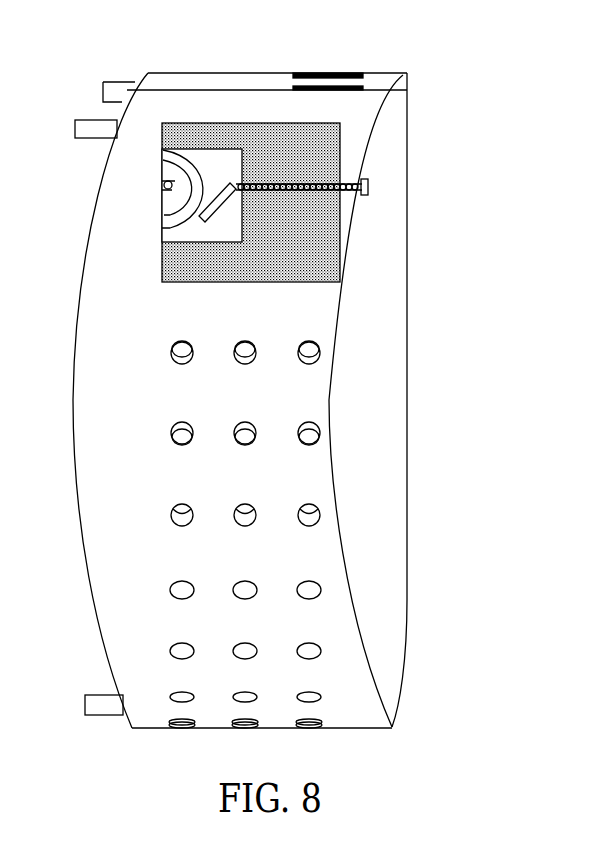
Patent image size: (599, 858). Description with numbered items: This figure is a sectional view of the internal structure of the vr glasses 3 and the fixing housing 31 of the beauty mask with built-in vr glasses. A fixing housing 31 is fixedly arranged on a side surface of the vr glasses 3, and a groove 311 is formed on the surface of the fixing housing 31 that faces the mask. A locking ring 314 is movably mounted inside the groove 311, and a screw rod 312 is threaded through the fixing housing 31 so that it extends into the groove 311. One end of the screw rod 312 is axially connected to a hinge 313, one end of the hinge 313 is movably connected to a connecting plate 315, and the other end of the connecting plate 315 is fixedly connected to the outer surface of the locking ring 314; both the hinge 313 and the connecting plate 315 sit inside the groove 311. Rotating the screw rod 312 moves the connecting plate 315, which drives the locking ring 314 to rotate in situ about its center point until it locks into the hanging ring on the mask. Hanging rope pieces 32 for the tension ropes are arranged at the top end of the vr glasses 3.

The vr glasses 3 is at (380, 484).
The fixing housing 31 is at (345, 138).
The groove 311 is at (208, 232).
The screw rod 312 is at (368, 190).
The hinge 313 is at (233, 185).
The locking ring 314 is at (165, 150).
The connecting plate 315 is at (218, 205).
The hanging rope piece 32 is at (330, 78).